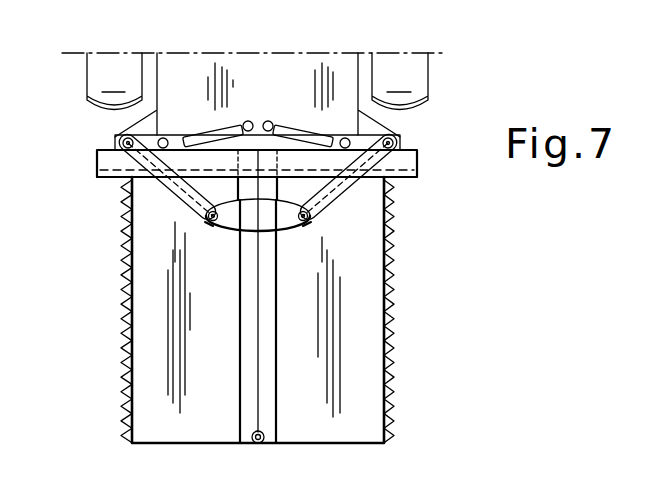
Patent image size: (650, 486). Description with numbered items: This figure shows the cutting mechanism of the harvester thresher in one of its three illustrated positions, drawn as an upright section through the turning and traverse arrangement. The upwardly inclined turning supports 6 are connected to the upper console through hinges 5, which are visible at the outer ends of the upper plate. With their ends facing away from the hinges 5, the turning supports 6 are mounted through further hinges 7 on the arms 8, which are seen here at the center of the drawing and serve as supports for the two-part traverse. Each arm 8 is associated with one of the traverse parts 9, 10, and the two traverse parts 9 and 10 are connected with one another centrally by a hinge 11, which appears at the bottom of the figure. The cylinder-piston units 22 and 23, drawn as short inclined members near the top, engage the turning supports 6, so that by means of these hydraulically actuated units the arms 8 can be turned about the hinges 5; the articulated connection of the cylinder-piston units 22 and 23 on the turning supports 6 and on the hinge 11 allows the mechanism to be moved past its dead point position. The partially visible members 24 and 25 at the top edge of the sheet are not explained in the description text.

The hinge 5 is at (395, 136).
The turning support 6 is at (423, 225).
The further hinge 7 is at (418, 267).
The arm 8 is at (262, 213).
The traverse part 9 is at (268, 375).
The traverse part 10 is at (245, 340).
The hinge 11 is at (266, 432).
The cylinder-piston unit 22 is at (311, 124).
The cylinder-piston unit 23 is at (197, 124).
The cylinder 24 is at (390, 55).
The cylinder 25 is at (114, 55).